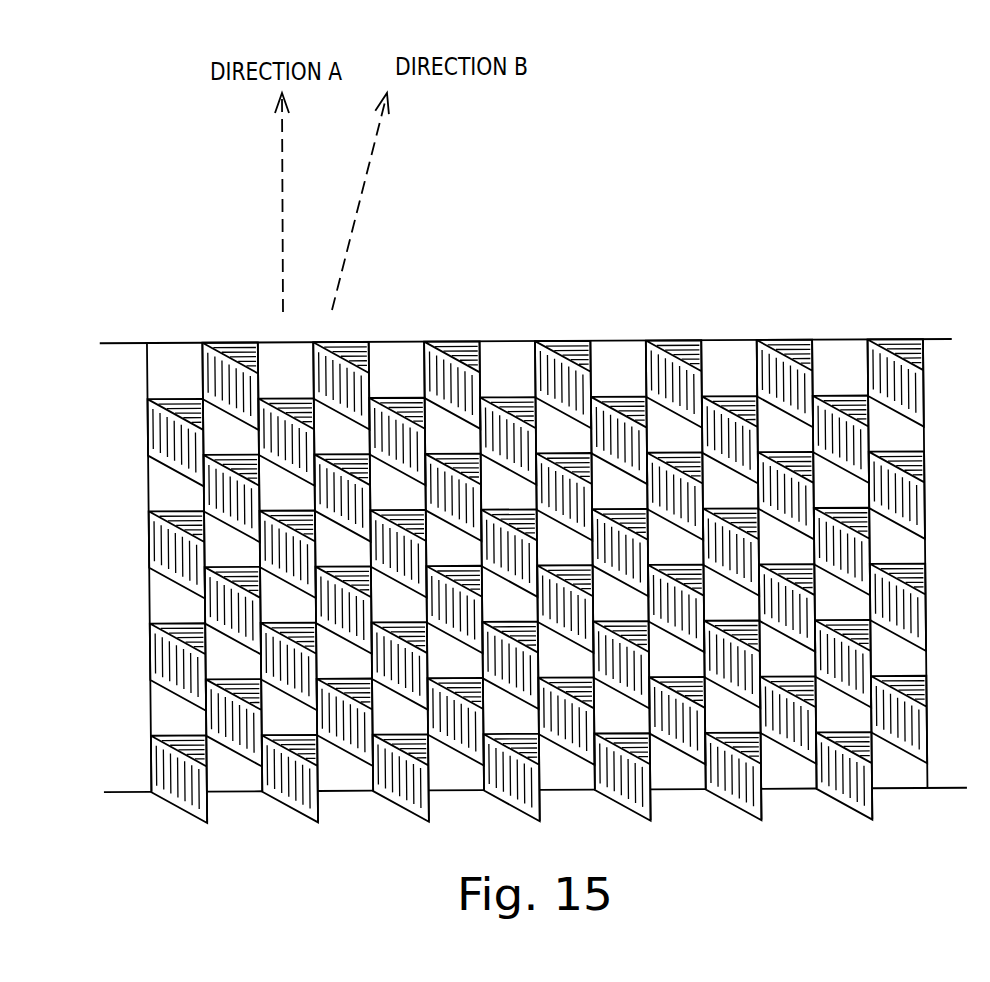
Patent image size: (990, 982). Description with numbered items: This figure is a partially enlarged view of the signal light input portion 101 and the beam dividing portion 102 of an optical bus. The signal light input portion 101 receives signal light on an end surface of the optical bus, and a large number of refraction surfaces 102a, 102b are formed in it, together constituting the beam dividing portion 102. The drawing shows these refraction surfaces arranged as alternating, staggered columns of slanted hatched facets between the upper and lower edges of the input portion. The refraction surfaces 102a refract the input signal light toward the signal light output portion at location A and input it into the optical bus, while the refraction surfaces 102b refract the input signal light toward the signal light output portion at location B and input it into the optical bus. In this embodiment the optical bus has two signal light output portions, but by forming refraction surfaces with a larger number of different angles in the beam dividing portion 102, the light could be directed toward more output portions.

The signal light input portion 101 is at (533, 494).
The beam dividing portion 102 is at (538, 494).
The refraction surfaces 102a is at (392, 353).
The refraction surfaces 102b is at (445, 245).